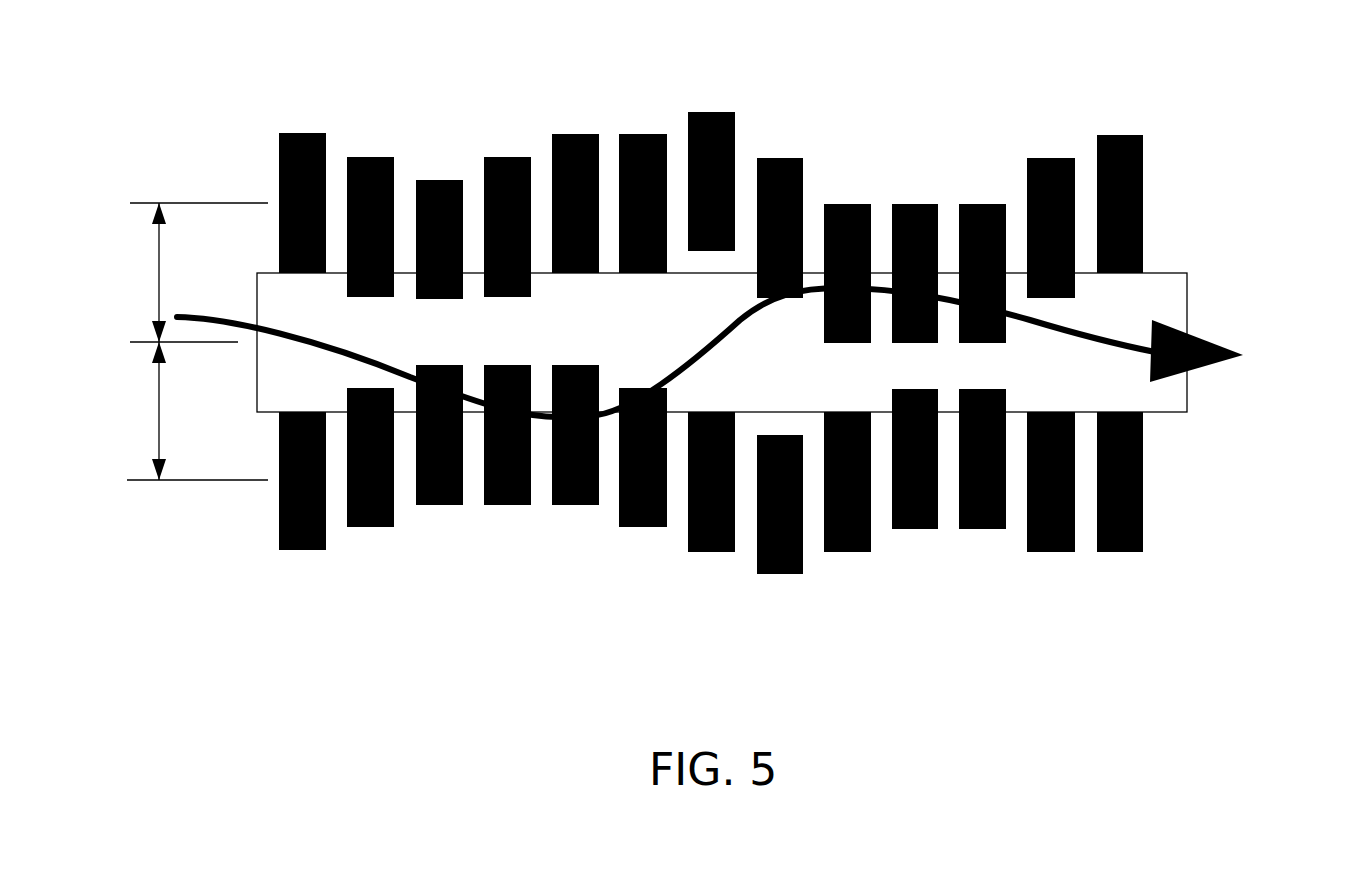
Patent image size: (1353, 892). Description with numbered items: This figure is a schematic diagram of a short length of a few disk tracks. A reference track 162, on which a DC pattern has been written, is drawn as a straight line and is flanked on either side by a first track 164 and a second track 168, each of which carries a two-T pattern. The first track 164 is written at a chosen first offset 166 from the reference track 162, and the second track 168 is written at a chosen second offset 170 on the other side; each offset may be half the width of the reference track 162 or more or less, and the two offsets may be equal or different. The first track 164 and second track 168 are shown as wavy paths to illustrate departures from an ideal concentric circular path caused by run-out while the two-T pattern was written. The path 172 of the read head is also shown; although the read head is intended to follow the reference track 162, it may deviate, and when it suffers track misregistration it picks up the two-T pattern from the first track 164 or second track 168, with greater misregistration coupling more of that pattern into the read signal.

The reference track 162 is at (1188, 402).
The first track 164 is at (1207, 203).
The first offset 166 is at (159, 273).
The second track 168 is at (1205, 488).
The second offset 170 is at (159, 410).
The path of the read head 172 is at (1107, 333).